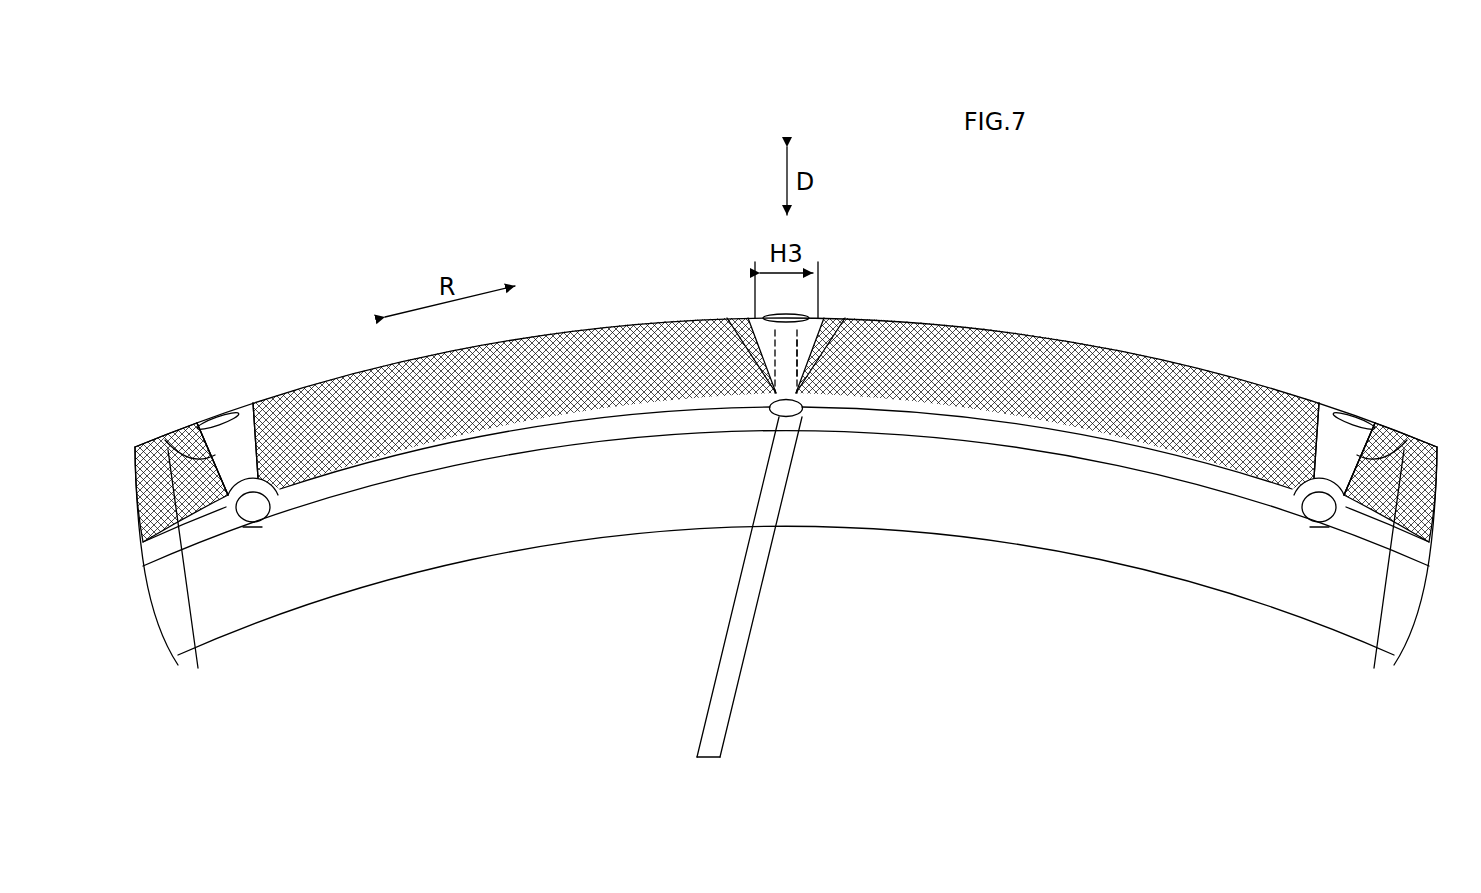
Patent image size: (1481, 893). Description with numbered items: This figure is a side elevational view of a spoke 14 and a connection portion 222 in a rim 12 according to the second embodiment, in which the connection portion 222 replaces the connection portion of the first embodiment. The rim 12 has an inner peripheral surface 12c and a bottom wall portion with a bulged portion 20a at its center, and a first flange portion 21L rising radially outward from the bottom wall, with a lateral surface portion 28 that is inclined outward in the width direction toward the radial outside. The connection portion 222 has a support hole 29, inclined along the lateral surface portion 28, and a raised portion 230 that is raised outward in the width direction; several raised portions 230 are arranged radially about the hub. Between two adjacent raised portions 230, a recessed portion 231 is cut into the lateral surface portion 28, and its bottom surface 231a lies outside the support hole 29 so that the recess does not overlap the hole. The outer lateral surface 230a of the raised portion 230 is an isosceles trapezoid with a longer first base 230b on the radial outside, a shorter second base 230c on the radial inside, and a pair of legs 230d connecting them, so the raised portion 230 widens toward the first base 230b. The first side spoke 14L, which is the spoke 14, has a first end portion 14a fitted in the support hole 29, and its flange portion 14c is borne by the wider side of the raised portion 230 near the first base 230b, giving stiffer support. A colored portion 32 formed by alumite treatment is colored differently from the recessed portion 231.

The rim 12 is at (1167, 358).
The inner peripheral surface 12c is at (1030, 548).
The spoke 14 is at (740, 688).
The first end portion 14a is at (813, 330).
The flange portion 14c is at (768, 312).
The first side spoke 14L is at (718, 728).
The bulged portion 20a is at (975, 538).
The first flange portion 21L is at (1093, 377).
The lateral surface portion 28 is at (592, 363).
The support hole 29 is at (257, 522).
The colored portion 32 is at (275, 485).
The connection portion 222 is at (197, 425).
The raised portion 230 is at (256, 455).
The outer lateral surface 230a is at (247, 442).
The first base 230b is at (217, 412).
The second base 230c is at (243, 527).
The legs 230d is at (178, 443).
The recessed portion 231 is at (150, 480).
The bottom surface 231a is at (198, 668).